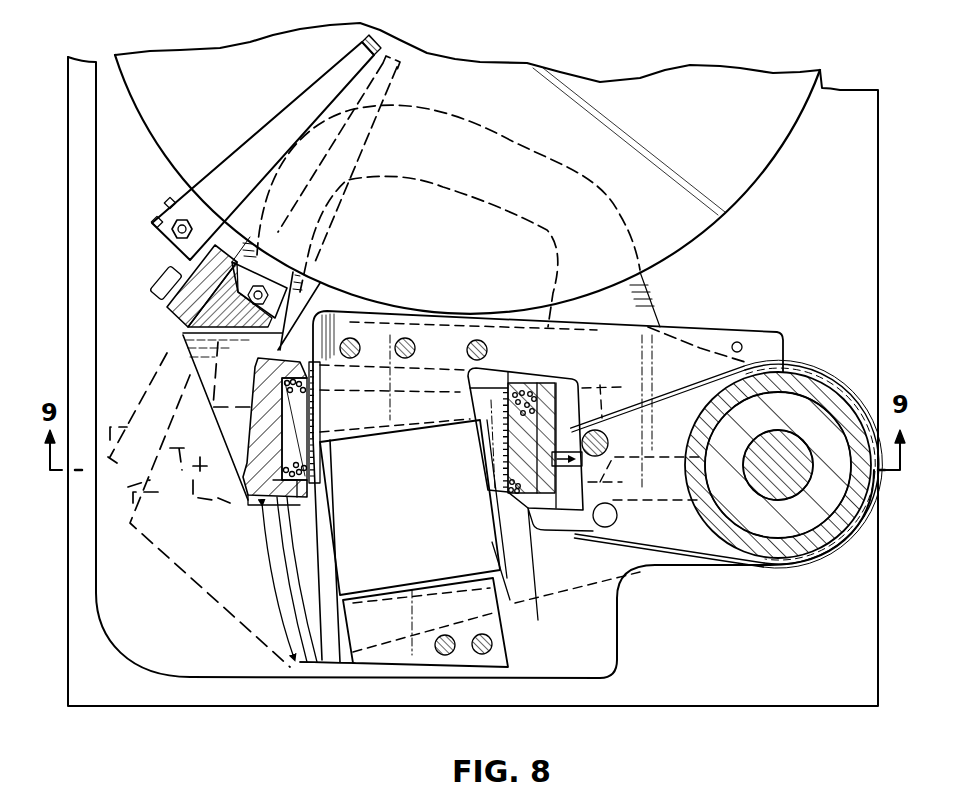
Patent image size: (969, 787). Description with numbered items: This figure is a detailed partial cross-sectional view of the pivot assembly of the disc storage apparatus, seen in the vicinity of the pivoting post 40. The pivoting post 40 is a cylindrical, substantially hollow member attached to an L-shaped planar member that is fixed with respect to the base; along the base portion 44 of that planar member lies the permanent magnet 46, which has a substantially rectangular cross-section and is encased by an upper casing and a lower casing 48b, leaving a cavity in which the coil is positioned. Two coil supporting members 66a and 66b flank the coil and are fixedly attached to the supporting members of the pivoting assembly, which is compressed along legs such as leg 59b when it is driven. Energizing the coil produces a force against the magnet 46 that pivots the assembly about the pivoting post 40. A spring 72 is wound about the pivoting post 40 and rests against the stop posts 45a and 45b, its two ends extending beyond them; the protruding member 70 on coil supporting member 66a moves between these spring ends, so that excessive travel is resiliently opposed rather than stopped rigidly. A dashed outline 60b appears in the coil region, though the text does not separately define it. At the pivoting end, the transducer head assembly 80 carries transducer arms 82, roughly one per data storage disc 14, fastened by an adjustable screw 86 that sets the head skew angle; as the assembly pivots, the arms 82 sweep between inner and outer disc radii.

The data storage discs 14 is at (222, 50).
The transducer arms 82 is at (250, 147).
The adjustable screw 86 is at (180, 230).
The transducer head assembly 80 is at (178, 320).
The leg of lower supporting member 59b is at (295, 292).
The phantom guide outline 60b is at (520, 148).
The protruding member 70 is at (550, 383).
The stop post 45a is at (590, 432).
The stop post 45b is at (605, 528).
The spring 72 is at (705, 391).
The pivoting post 40 is at (806, 373).
The permanent magnet 46 is at (425, 518).
The coil supporting member 66b is at (252, 505).
The coil supporting member 66a is at (535, 525).
The lower-casing 48b is at (537, 640).
The base portion 44 is at (385, 668).